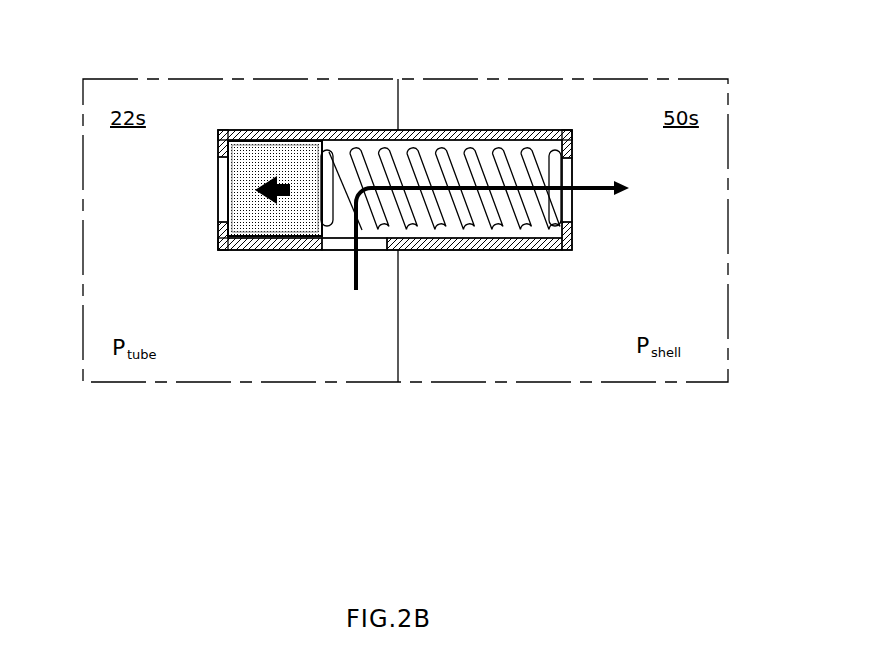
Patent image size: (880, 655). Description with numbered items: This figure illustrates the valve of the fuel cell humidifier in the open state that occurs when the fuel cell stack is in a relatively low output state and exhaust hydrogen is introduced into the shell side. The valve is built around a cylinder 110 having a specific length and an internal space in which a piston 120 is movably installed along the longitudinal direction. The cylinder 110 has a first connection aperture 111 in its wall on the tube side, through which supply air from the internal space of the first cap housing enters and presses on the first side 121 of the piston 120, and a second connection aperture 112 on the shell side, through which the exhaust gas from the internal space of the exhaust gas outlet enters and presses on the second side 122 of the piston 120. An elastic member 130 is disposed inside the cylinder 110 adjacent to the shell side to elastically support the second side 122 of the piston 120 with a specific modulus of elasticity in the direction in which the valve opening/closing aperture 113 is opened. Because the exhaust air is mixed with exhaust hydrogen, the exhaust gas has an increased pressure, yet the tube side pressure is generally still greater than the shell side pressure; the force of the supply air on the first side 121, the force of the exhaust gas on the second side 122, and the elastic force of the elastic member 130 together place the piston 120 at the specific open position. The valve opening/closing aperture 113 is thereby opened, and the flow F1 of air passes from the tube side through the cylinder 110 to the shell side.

The cylinder 110 is at (537, 130).
The first connection aperture 111 is at (216, 197).
The second connection aperture 112 is at (574, 170).
The valve opening/closing aperture 113 is at (343, 251).
The piston 120 is at (270, 150).
The first side of the piston 121 is at (222, 162).
The second side of the piston 122 is at (334, 160).
The elastic member 130 is at (438, 150).
The flow of air F1 is at (492, 251).